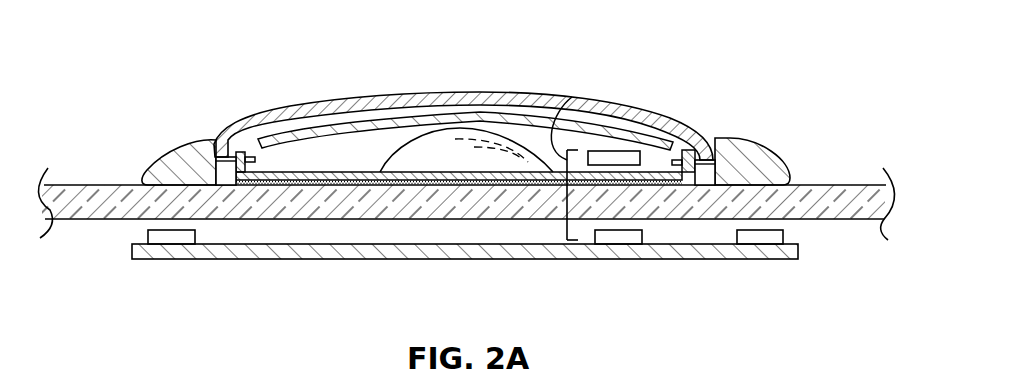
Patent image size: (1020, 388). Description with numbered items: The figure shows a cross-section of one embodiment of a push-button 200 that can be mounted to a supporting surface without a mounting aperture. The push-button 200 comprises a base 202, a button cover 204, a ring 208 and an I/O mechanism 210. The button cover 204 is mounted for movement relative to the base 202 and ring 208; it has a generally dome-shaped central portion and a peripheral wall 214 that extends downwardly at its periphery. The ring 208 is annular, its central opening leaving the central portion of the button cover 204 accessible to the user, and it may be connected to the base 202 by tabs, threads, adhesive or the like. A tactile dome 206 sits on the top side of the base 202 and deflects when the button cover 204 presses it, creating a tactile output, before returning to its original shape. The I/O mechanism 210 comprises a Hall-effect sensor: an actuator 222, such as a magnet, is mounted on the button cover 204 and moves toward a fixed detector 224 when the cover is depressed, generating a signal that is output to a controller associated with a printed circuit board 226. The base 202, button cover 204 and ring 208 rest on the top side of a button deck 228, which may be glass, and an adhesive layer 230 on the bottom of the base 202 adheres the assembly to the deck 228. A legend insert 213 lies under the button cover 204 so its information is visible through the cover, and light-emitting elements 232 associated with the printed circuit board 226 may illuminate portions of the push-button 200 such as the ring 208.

The push-button 200 is at (733, 71).
The base 202 is at (371, 173).
The button cover 204 is at (455, 90).
The tactile dome 206 is at (420, 150).
The ring 208 is at (748, 158).
The I/O mechanism 210 is at (572, 97).
The legend insert 213 is at (335, 122).
The peripheral wall 214 is at (233, 127).
The actuator 222 is at (612, 155).
The detector 224 is at (620, 238).
The printed circuit board 226 is at (523, 250).
The button deck 228 is at (845, 187).
The adhesive layer 230 is at (298, 184).
The light-emitting elements 232 is at (170, 240).